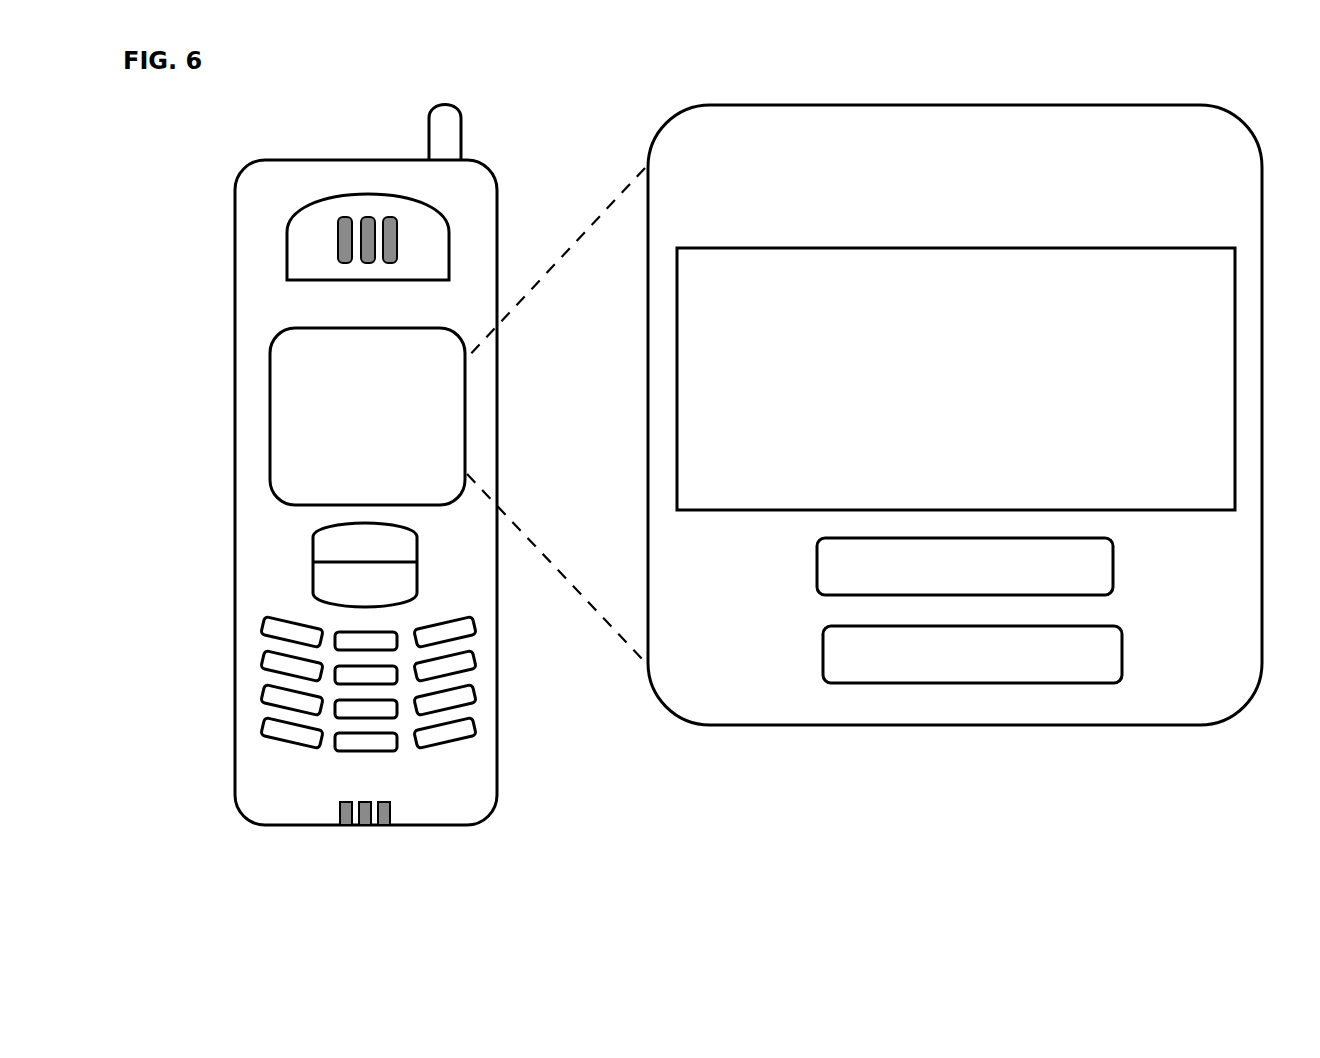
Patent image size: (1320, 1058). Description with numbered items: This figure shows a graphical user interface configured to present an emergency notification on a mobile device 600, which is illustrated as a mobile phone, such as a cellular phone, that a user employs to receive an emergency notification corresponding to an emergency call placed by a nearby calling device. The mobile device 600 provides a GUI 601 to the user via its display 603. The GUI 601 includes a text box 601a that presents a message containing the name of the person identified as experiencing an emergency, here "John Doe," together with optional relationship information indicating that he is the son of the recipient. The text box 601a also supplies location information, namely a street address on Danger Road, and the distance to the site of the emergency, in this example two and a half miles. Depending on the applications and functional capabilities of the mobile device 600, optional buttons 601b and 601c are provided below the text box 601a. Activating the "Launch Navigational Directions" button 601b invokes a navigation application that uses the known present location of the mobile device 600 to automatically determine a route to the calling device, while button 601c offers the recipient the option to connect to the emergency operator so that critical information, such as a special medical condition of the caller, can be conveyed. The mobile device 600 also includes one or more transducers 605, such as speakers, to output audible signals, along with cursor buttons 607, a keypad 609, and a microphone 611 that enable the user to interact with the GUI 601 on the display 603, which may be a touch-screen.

The mobile device 600 is at (497, 206).
The graphical user interface (GUI) 601 is at (700, 123).
The text box 601a is at (677, 365).
The button 601b is at (817, 573).
The button 601c is at (823, 660).
The display 603 is at (270, 388).
The transducers 605 is at (290, 247).
The cursor buttons 607 is at (312, 551).
The keypad 609 is at (225, 608).
The microphone 611 is at (333, 812).